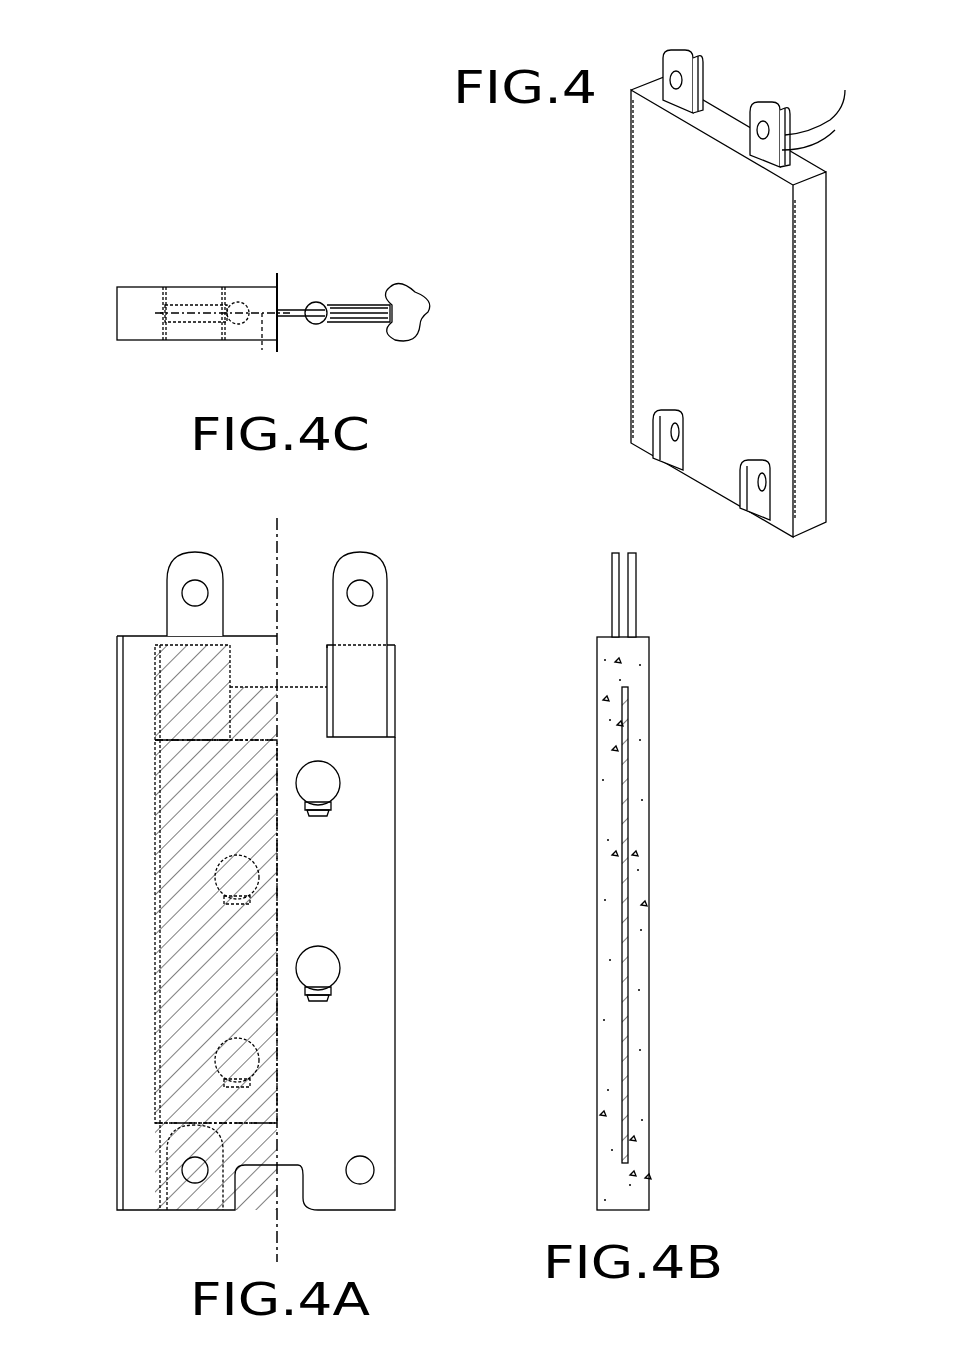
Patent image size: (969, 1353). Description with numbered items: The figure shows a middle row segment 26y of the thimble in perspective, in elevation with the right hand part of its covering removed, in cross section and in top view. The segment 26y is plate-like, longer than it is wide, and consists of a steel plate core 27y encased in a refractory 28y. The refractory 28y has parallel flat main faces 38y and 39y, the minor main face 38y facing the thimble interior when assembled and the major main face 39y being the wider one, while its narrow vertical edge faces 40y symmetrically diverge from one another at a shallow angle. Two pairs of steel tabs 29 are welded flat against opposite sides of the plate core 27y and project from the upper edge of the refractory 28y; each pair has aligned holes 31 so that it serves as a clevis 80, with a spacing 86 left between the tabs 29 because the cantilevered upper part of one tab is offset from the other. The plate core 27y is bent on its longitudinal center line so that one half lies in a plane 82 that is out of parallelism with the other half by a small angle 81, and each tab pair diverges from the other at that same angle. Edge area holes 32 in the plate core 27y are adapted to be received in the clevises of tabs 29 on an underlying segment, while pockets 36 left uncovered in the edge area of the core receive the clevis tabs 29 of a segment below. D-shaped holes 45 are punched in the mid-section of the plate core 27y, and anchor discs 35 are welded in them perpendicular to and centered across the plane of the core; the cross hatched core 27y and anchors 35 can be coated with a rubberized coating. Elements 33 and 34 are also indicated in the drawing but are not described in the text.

In FIG. 4, the middle row segment 26y is at (612, 244).
In FIG. 4A, the steel plate core 27y is at (352, 938).
In FIG. 4B, the steel plate core 27y is at (627, 765).
In FIG. 4C, the refractory 28y is at (137, 314).
In FIG. 4A, the refractory 28y is at (137, 893).
In FIG. 4, the tab 29 is at (838, 111).
In FIG. 4C, the tab 29 is at (428, 310).
In FIG. 4A, the tab 29 is at (168, 562).
In FIG. 4B, the tab 29 is at (619, 598).
In FIG. 4A, the hole 31 is at (368, 600).
In FIG. 4, the edge area hole 32 is at (760, 485).
In FIG. 4A, the edge area hole 32 is at (362, 1160).
In FIG. 4A, the bracket 33 is at (308, 687).
In FIG. 4A, the notch 34 is at (320, 1210).
In FIG. 4C, the anchor disc 35 is at (314, 302).
In FIG. 4A, the anchor disc 35 is at (322, 805).
In FIG. 4, the pocket 36 is at (653, 450).
In FIG. 4, the main face 38y is at (755, 350).
In FIG. 4C, the main face 38y is at (145, 340).
In FIG. 4B, the main face 38y is at (597, 910).
In FIG. 4C, the main face 39y is at (145, 287).
In FIG. 4B, the main face 39y is at (649, 943).
In FIG. 4, the edge face 40y is at (810, 308).
In FIG. 4A, the D-shaped hole 45 is at (322, 762).
In FIG. 4, the clevis 80 is at (715, 60).
In FIG. 4C, the angle 81 is at (287, 340).
In FIG. 4C, the plane 82 is at (262, 350).
In FIG. 4, the spacing 86 is at (660, 48).